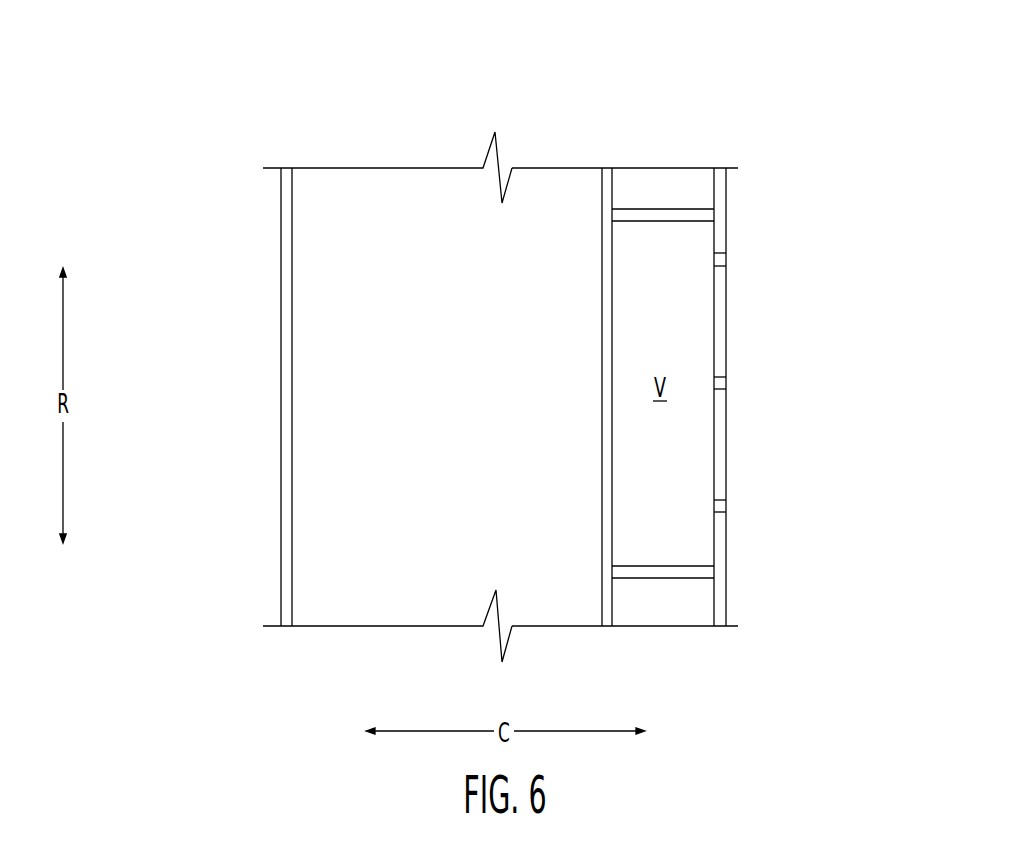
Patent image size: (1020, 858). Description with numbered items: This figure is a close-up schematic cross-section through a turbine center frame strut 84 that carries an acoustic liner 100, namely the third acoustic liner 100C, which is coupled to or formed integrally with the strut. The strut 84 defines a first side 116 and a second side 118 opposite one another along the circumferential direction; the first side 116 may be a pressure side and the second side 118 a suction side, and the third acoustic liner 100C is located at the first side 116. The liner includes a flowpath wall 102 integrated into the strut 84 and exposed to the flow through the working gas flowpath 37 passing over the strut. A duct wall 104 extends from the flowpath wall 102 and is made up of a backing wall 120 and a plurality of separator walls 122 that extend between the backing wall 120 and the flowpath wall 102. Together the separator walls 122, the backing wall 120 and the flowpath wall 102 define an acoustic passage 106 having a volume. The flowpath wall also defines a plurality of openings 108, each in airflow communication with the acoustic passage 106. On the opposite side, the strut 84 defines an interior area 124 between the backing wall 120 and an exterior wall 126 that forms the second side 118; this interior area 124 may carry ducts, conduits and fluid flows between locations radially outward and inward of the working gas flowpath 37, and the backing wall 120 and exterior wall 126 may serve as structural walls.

The working gas flowpath 37 is at (175, 424).
The turbine center frame strut 84 is at (656, 104).
The stiffener assembly 100 is at (756, 258).
The third acoustic liner 100C is at (690, 180).
The flowpath wall 102 is at (726, 308).
The duct wall 104 is at (580, 293).
The acoustic passage 106 is at (704, 448).
The opening 108 is at (736, 377).
The first side 116 is at (863, 308).
The second side 118 is at (211, 336).
The backing wall 120 is at (609, 370).
The separator wall 122 is at (649, 208).
The interior area 124 is at (450, 386).
The exterior wall 126 is at (281, 508).